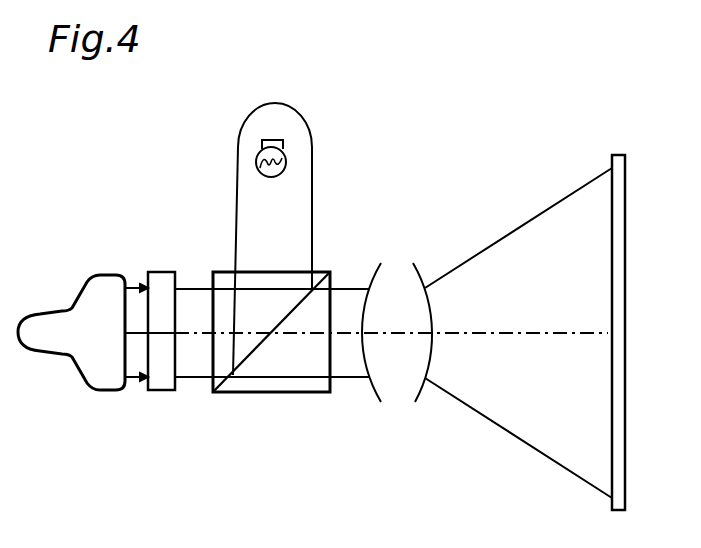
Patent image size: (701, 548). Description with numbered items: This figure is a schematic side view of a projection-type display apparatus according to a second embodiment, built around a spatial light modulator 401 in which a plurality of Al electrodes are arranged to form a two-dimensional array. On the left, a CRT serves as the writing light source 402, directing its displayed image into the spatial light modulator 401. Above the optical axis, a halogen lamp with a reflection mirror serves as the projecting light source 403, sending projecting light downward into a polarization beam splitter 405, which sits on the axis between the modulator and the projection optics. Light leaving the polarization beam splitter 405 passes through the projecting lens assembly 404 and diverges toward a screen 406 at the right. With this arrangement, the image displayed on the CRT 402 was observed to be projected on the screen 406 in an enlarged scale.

The spatial light modulator 401 is at (163, 272).
The writing light source 402 is at (100, 274).
The projecting light source 403 is at (288, 116).
The projecting lens assembly 404 is at (398, 265).
The polarization beam splitter 405 is at (288, 393).
The screen 406 is at (620, 155).